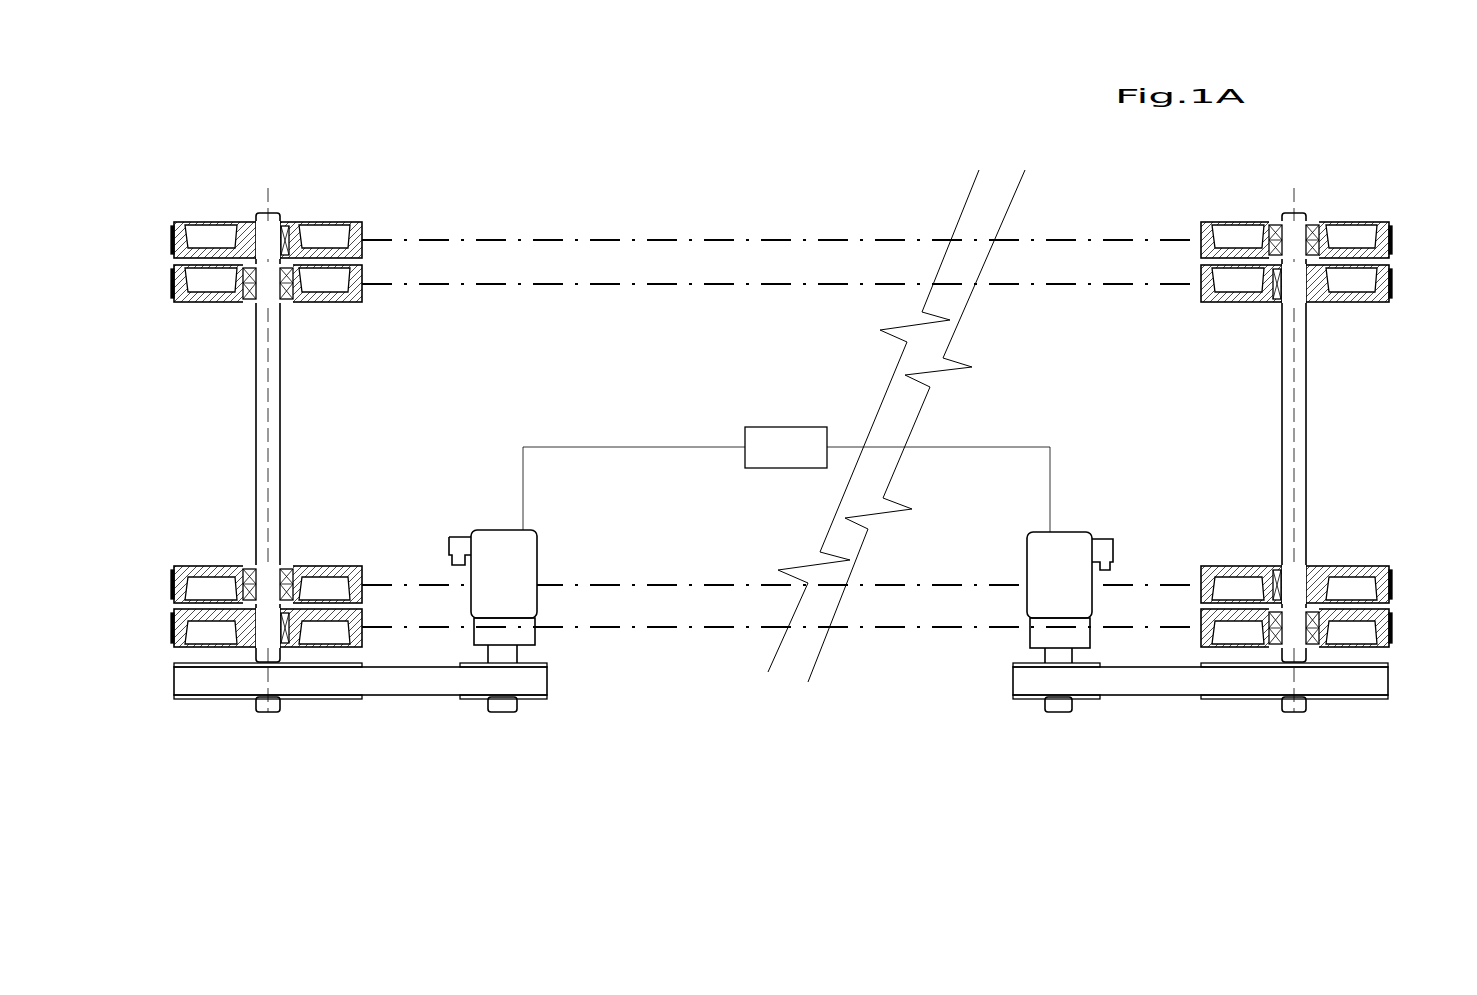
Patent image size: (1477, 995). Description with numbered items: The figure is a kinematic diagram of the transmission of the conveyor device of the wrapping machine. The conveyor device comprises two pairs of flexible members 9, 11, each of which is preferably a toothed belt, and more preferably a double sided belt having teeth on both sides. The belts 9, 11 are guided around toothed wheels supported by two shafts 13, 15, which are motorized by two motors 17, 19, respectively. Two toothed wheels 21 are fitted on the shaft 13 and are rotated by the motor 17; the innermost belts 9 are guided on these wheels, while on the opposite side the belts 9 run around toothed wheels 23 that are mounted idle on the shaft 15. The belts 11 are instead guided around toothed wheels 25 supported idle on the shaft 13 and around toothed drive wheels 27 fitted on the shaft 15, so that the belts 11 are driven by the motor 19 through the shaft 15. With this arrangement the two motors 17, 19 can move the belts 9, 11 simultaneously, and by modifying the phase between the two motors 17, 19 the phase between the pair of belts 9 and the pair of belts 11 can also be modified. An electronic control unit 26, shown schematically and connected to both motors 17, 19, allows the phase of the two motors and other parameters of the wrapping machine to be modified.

The flexible member 9 is at (570, 287).
The flexible member 11 is at (474, 238).
The shaft 13 is at (268, 412).
The shaft 15 is at (1296, 430).
The motor 17 is at (497, 543).
The motor 19 is at (1062, 540).
The toothed wheel 21 is at (172, 283).
The toothed wheel 23 is at (1393, 285).
The toothed wheel 25 is at (172, 237).
The electronic control unit 26 is at (785, 427).
The toothed drive wheel 27 is at (1393, 233).